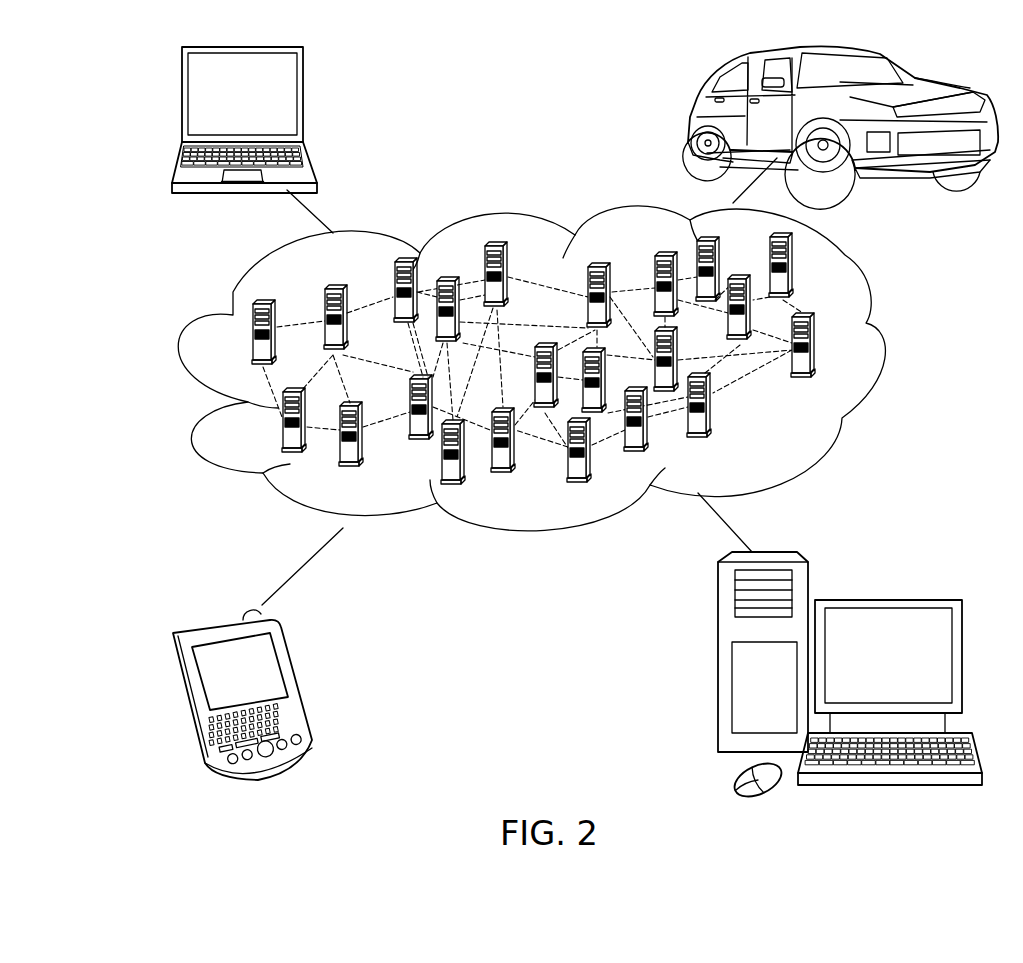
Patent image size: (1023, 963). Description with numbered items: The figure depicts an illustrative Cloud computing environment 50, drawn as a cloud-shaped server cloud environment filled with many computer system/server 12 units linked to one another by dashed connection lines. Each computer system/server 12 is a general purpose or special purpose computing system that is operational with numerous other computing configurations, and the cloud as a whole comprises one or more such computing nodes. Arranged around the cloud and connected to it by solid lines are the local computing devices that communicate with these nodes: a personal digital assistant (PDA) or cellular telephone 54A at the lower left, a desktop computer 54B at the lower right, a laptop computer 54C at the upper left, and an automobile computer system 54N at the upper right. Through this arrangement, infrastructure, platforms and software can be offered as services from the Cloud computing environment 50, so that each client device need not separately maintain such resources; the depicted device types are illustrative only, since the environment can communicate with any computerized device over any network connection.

The Cloud computing environment 50 is at (888, 343).
The computer system/server 12 is at (845, 376).
The personal digital assistant (PDA) or cellular telephone 54A is at (298, 680).
The desktop computer 54B is at (887, 600).
The laptop computer 54C is at (304, 100).
The automobile computer system 54N is at (692, 117).